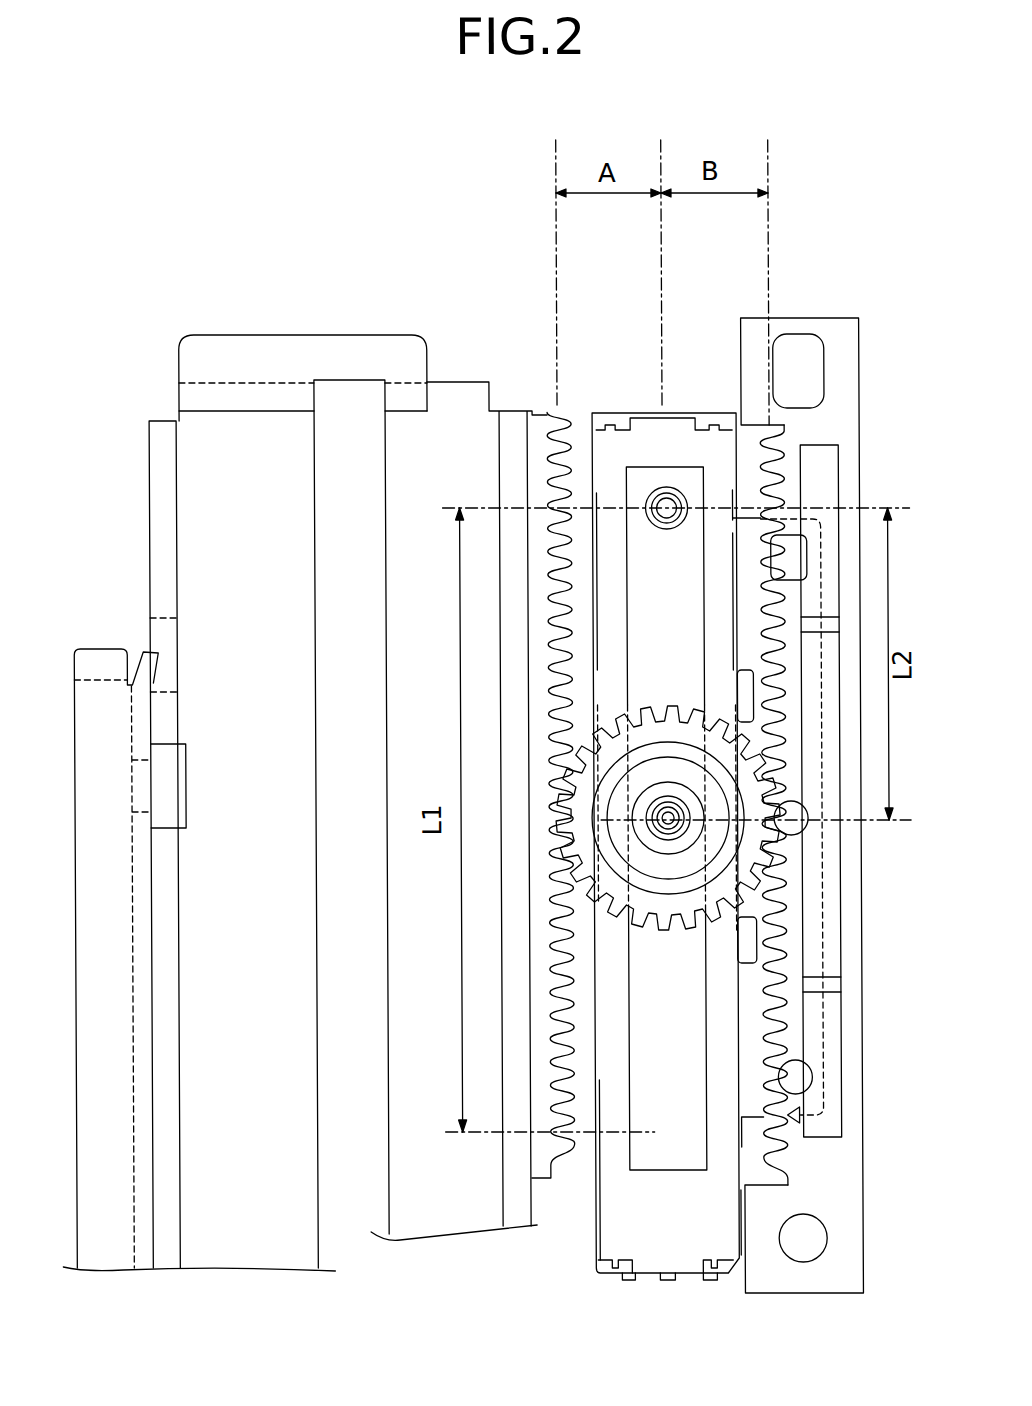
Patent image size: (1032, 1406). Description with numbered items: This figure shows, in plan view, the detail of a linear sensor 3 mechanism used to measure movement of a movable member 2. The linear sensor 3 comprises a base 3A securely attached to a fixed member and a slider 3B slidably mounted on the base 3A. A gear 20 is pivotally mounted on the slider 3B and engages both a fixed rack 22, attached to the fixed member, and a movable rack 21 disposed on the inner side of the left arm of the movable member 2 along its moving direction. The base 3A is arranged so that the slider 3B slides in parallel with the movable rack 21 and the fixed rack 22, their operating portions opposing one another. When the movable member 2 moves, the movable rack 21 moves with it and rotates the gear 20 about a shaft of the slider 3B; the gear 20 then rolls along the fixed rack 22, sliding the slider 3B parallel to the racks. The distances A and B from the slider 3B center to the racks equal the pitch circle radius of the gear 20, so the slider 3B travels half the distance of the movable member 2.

The movable member 2 is at (188, 492).
The linear sensor 3 is at (606, 1277).
The base 3A is at (694, 1245).
The slider 3B is at (677, 853).
The gear 20 is at (735, 888).
The movable rack 21 is at (533, 412).
The fixed rack 22 is at (825, 326).